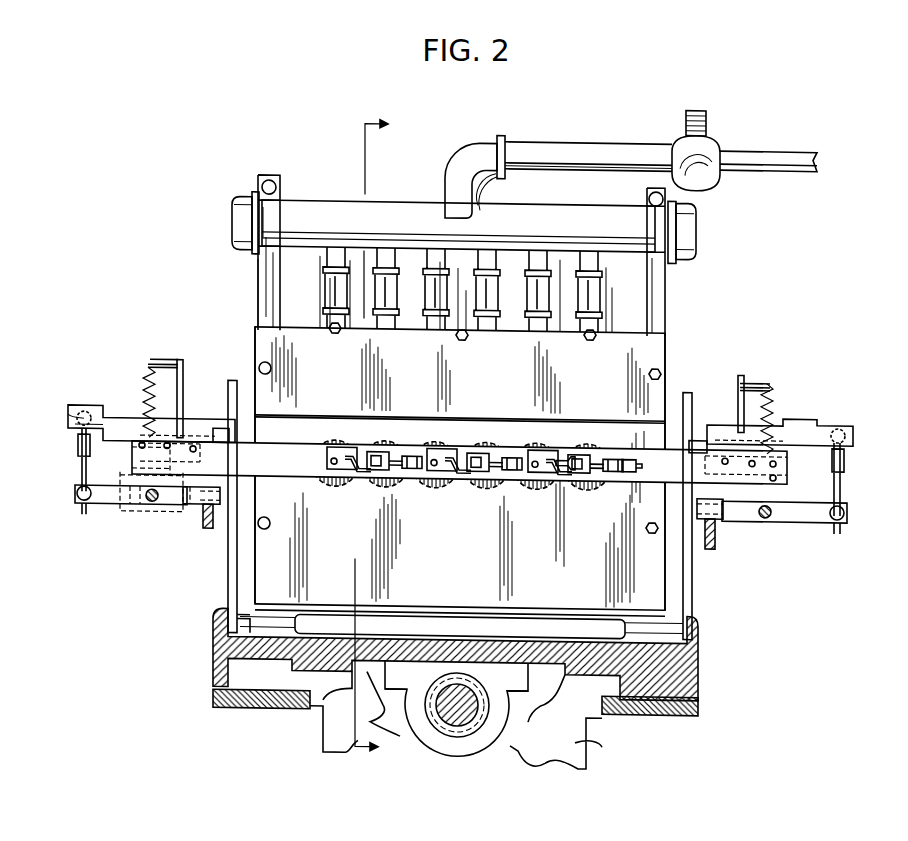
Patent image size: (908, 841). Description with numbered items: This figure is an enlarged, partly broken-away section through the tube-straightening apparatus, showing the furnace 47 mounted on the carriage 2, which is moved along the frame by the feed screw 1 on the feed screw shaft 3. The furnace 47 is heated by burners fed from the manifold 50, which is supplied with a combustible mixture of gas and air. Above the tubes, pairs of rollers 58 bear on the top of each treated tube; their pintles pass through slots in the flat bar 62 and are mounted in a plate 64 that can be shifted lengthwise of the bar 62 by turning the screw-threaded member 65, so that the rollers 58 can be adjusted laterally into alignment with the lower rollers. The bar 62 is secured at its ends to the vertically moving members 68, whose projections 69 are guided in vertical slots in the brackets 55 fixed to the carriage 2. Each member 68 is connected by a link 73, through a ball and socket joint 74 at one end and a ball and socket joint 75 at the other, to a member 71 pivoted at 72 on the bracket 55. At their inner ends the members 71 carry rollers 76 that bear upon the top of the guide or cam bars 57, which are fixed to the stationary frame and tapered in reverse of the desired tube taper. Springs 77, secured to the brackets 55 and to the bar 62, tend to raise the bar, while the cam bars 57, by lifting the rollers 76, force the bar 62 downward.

The feed screw 1 is at (470, 713).
The carriage 2 is at (700, 663).
The feed screw shaft 3 is at (379, 436).
The furnace 47 is at (668, 354).
The manifold 50 is at (398, 214).
The brackets 55 is at (228, 392).
The guide or cam bars 57 is at (207, 532).
The rollers 58 is at (370, 488).
The flat bar 62 is at (270, 478).
The plate 64 is at (458, 449).
The member 65 is at (500, 484).
The vertically moving members 68 is at (117, 420).
The projections 69 is at (238, 432).
The members 71 is at (106, 510).
The pivot 72 is at (152, 506).
The link 73 is at (82, 466).
The ball and socket joint 74 is at (74, 422).
The ball and socket joint 75 is at (77, 501).
The rollers 76 is at (197, 510).
The springs 77 is at (148, 388).